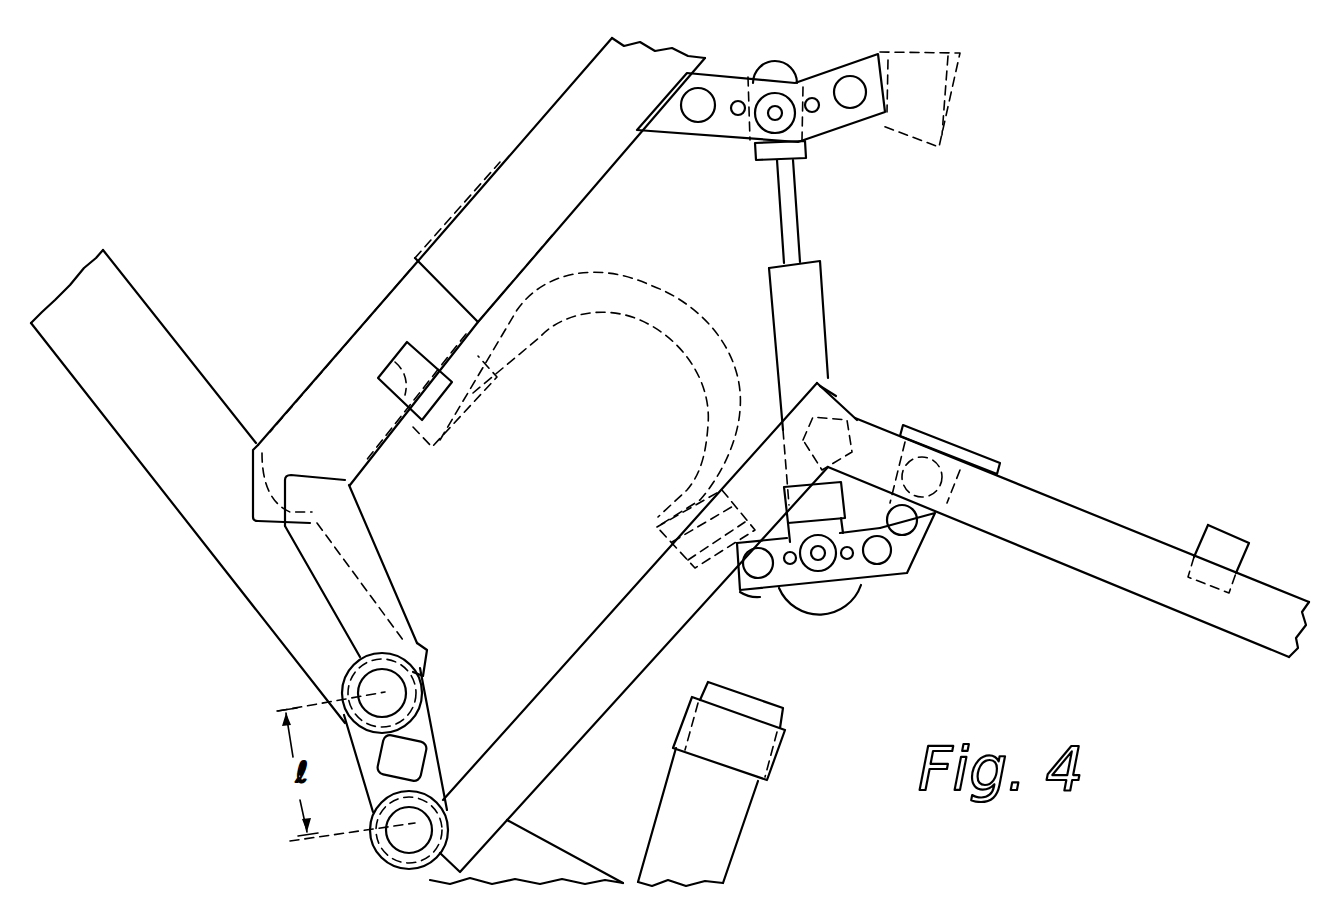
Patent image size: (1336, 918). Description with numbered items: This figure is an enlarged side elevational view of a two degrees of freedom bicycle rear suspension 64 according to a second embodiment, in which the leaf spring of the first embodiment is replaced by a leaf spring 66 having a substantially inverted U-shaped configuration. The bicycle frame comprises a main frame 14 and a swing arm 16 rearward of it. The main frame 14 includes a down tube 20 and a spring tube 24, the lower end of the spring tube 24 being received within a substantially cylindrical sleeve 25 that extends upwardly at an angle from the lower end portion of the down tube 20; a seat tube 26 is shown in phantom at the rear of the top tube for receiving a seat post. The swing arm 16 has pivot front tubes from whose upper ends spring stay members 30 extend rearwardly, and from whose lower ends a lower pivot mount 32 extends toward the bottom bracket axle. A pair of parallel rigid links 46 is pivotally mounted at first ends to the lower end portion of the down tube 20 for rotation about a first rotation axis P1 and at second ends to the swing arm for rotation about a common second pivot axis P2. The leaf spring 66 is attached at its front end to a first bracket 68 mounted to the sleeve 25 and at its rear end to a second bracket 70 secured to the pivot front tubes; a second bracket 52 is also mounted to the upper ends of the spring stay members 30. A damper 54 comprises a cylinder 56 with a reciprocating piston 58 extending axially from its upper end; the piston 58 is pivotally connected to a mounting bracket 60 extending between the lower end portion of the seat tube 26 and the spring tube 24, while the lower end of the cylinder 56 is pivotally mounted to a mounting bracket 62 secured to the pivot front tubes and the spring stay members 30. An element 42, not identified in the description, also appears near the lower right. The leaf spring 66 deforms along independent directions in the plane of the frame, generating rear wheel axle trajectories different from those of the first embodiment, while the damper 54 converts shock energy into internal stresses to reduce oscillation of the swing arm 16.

The main frame 14 is at (460, 202).
The swing arm 16 is at (1116, 517).
The down tube 20 is at (178, 364).
The spring tube 24 is at (513, 163).
The sleeve 25 is at (323, 396).
The seat tube 26 is at (923, 106).
The spring stay members 30 is at (1114, 557).
The lower pivot mount 32 is at (548, 857).
The shock absorber 42 is at (730, 822).
The parallel rigid links 46 is at (430, 737).
The second bracket 52 is at (1002, 468).
The damper 54 is at (758, 232).
The cylinder 56 is at (820, 305).
The reciprocating piston 58 is at (792, 216).
The mounting bracket 60 is at (830, 116).
The mounting bracket 62 is at (907, 556).
The two degrees of freedom bicycle rear suspension 64 is at (1018, 216).
The leaf spring 66 is at (637, 303).
The first bracket 68 is at (402, 372).
The second bracket 70 is at (672, 622).
The first rotation axis P1 is at (388, 686).
The second pivot axis P2 is at (420, 828).